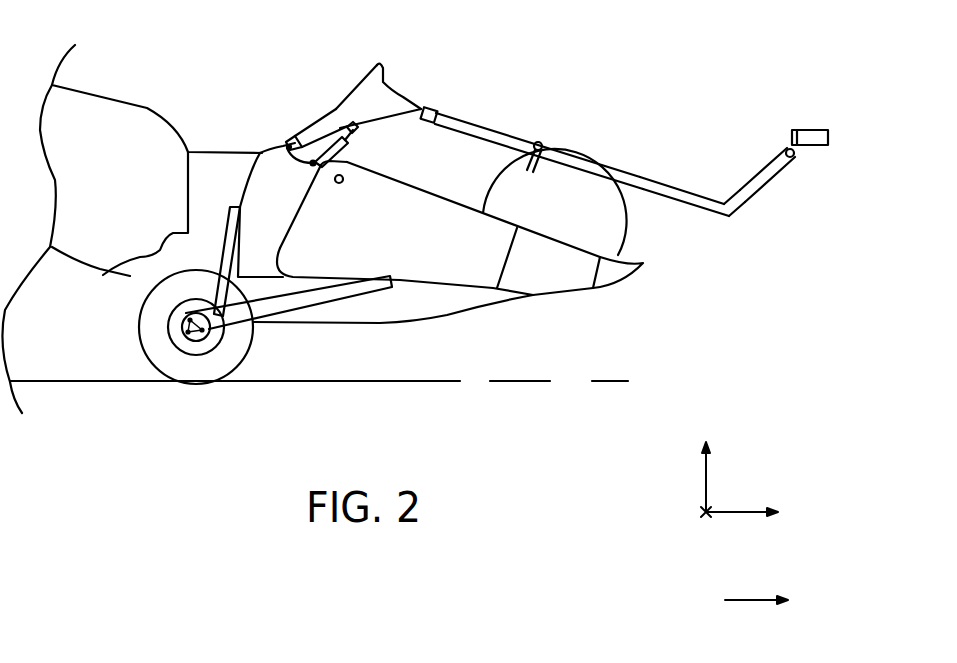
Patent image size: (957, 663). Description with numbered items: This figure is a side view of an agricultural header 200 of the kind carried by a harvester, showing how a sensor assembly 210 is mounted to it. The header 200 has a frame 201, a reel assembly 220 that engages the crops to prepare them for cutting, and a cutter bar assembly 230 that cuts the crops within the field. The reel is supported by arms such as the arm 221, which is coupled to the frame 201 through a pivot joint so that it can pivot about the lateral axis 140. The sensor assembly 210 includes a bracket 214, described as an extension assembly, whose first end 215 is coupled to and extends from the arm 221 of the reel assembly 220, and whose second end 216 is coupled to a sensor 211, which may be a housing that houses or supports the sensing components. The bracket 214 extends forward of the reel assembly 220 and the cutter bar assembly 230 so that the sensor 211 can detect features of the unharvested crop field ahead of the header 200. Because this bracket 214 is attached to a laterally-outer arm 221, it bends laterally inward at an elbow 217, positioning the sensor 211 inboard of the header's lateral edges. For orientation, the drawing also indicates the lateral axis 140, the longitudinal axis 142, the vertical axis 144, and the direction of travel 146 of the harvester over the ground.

The header 200 is at (398, 44).
The frame 201 is at (262, 173).
The sensor assembly 210 is at (812, 116).
The sensor 211 is at (820, 146).
The bracket 214 is at (695, 207).
The first end 215 is at (548, 172).
The second end 216 is at (775, 170).
The elbow 217 is at (727, 198).
The reel assembly 220 is at (563, 133).
The arm 221 is at (460, 121).
The cutter bar assembly 230 is at (618, 297).
The lateral axis 140 is at (706, 515).
The longitudinal axis 142 is at (733, 513).
The vertical axis 144 is at (706, 482).
The direction of travel 146 is at (747, 600).